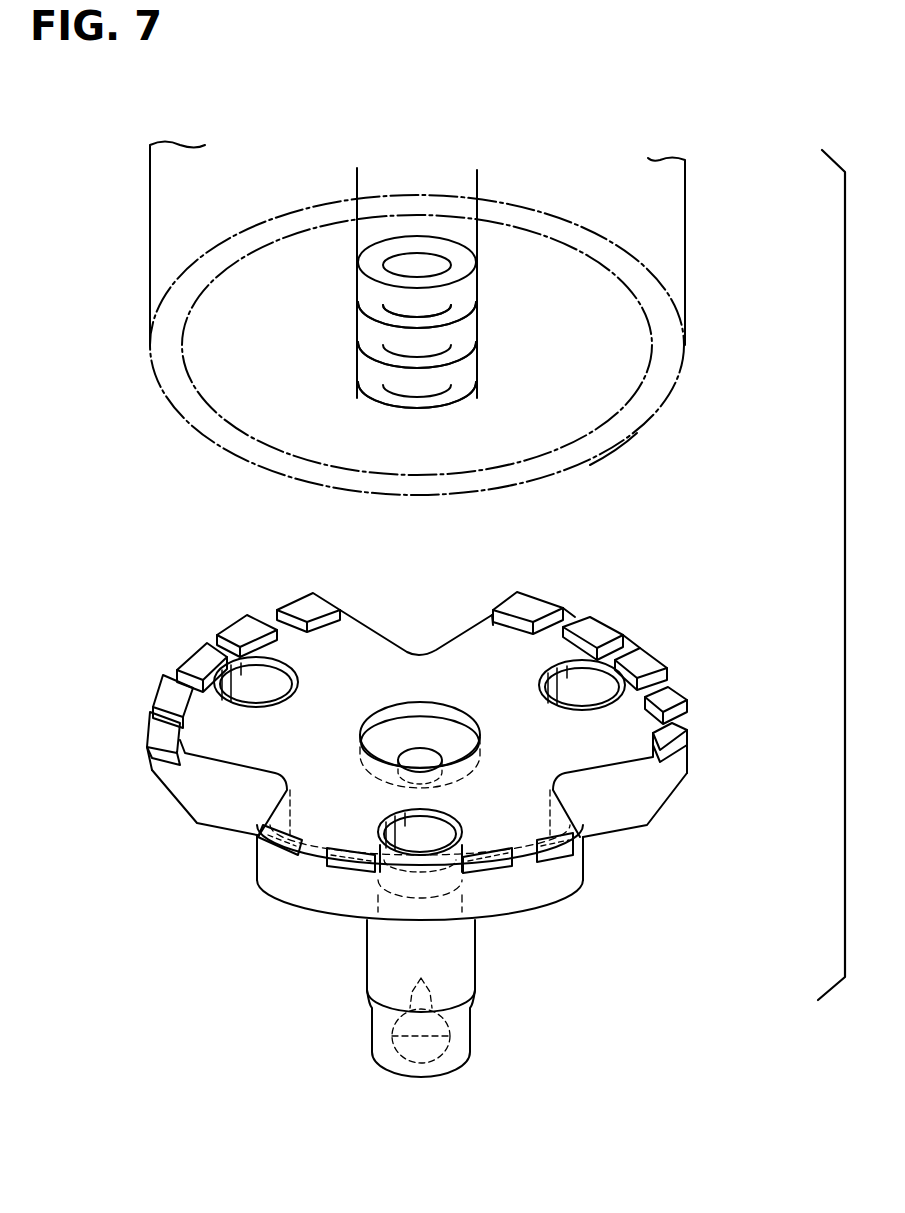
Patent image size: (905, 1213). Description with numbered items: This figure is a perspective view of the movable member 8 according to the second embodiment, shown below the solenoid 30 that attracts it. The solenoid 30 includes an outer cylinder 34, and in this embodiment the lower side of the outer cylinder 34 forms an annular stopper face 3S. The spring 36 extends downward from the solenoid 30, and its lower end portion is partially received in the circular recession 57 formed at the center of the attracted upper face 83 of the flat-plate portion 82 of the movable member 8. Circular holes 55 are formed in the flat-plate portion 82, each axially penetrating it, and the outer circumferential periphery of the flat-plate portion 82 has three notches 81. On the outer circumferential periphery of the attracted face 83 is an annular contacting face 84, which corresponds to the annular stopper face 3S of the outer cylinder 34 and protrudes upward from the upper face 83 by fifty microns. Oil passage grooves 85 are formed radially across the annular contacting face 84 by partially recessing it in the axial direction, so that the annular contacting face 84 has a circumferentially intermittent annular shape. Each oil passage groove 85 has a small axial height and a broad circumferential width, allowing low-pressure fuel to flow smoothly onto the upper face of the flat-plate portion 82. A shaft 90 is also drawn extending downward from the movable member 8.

The movable member 8 is at (606, 600).
The solenoid 30 is at (175, 272).
The outer cylinder 34 is at (670, 240).
The annular stopper face 3S is at (651, 411).
The spring 36 is at (457, 245).
The circular hole 55 is at (254, 685).
The circular recession 57 is at (418, 705).
The notch 81 is at (380, 642).
The flat-plate portion 82 is at (655, 710).
The attracted face 83 is at (485, 643).
The annular contacting face 84 is at (530, 602).
The oil passage groove 85 is at (282, 607).
The shaft 90 is at (477, 975).